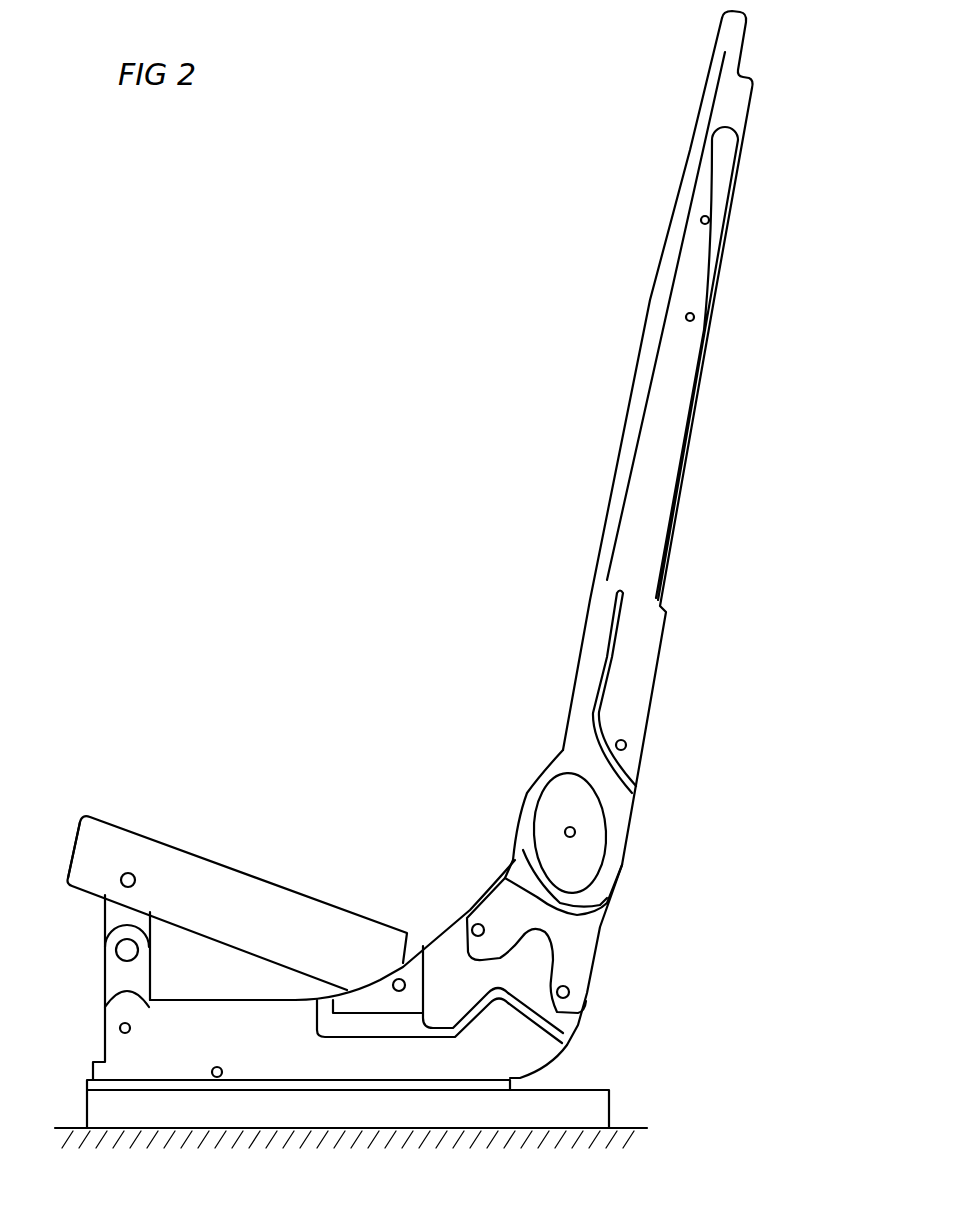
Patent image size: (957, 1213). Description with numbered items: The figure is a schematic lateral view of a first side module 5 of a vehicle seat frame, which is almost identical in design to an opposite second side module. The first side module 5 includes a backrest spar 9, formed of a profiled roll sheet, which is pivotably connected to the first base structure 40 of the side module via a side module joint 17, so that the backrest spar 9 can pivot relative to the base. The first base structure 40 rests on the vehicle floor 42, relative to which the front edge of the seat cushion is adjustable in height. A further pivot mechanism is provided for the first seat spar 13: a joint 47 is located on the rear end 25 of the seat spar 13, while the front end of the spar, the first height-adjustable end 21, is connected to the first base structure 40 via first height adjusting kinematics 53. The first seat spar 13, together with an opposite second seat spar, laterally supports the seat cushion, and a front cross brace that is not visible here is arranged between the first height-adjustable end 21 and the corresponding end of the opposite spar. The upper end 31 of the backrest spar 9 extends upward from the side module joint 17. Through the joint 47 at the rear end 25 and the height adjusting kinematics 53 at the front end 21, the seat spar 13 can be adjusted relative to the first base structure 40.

The first side module 5 is at (510, 659).
The backrest spar 9 is at (655, 384).
The first seat spar 13 is at (237, 897).
The side module joint 17 is at (575, 832).
The first height-adjustable end 21 is at (104, 848).
The rear end 25 is at (393, 948).
The upper end of backrest side part 31 is at (723, 52).
The first base structure 40 is at (275, 1063).
The vehicle floor 42 is at (633, 1114).
The joint 47 is at (413, 960).
The first height adjusting kinematics 53 is at (108, 967).